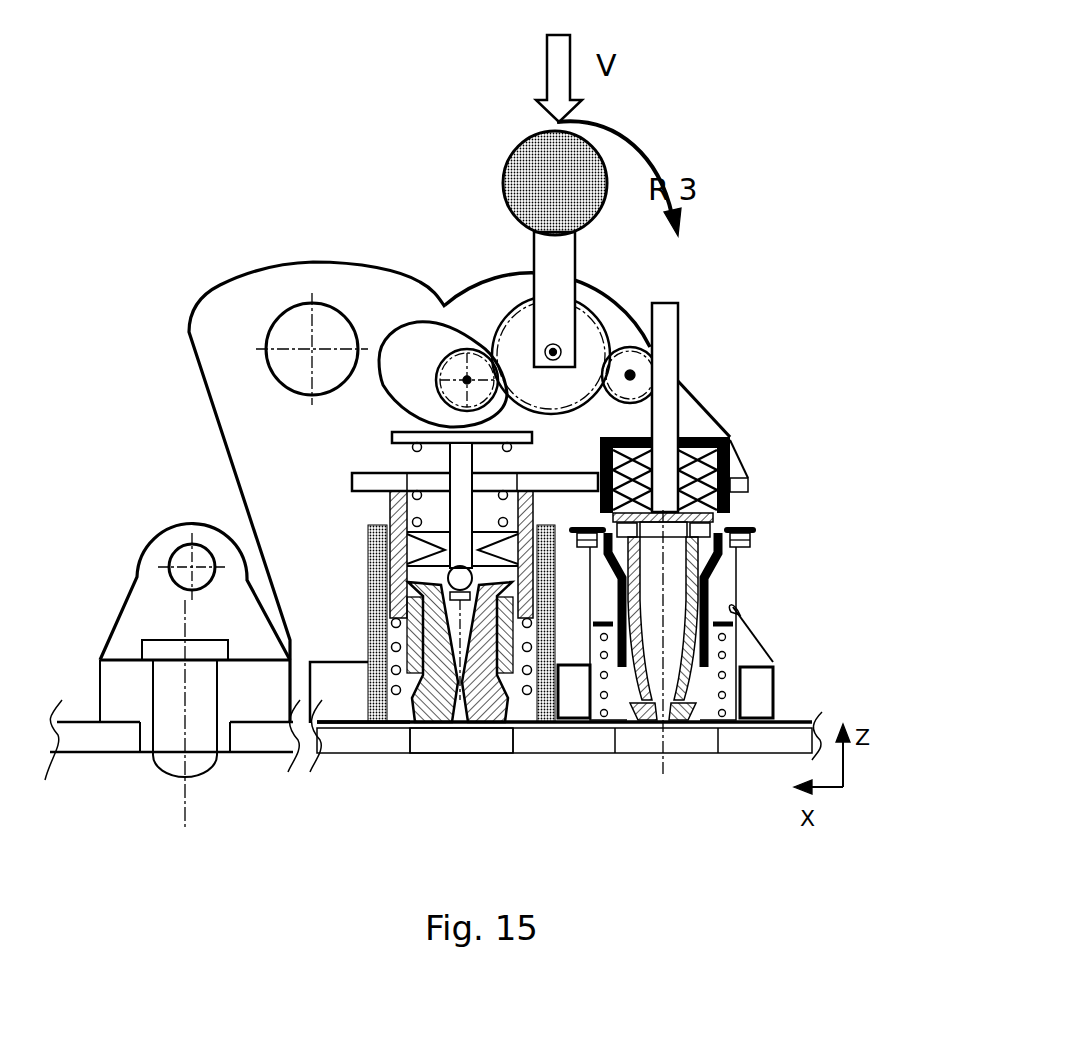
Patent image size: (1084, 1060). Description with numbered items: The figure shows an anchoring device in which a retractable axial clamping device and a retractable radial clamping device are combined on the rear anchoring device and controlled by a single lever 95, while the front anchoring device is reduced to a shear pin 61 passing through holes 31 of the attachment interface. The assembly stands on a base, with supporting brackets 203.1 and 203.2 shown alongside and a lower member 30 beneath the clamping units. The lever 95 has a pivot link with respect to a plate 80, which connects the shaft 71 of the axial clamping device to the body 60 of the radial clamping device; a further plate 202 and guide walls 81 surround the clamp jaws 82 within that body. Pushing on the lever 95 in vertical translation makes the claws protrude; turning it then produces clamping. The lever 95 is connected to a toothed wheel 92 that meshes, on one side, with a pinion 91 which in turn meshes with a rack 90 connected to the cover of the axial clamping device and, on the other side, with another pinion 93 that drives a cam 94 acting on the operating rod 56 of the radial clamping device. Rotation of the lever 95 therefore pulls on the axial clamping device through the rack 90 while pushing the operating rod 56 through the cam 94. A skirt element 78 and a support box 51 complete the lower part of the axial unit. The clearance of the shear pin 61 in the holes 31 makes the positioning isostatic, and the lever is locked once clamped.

The large bracket 203.1 is at (245, 330).
The small bracket 203.2 is at (142, 600).
The shear pin 61 is at (165, 710).
The base plate 30 is at (348, 737).
The body of the radial clamping device 60 is at (407, 733).
The holes 31 is at (467, 737).
The upper plate 202 is at (417, 470).
The plate 80 is at (373, 478).
The guide wall 81 is at (373, 600).
The clamp jaws 82 is at (528, 683).
The cam 94 is at (400, 353).
The pinion 93 is at (447, 353).
The toothed wheel 92 is at (517, 330).
The rack 90 is at (665, 417).
The operating rod 56 is at (580, 490).
The pinion 91 is at (653, 350).
The lever 95 is at (543, 185).
The shaft of the axial clamping device 71 is at (545, 498).
The nozzle skirt 78 is at (720, 680).
The support box 51 is at (760, 687).